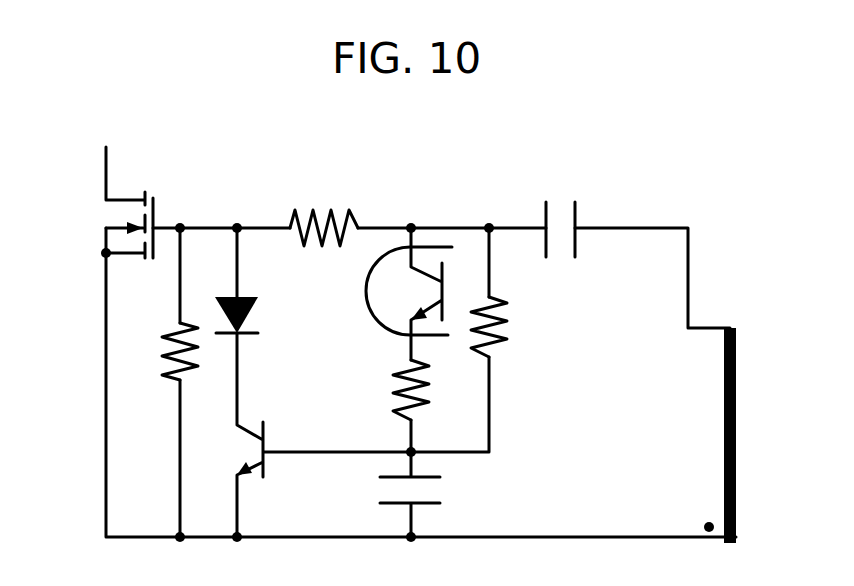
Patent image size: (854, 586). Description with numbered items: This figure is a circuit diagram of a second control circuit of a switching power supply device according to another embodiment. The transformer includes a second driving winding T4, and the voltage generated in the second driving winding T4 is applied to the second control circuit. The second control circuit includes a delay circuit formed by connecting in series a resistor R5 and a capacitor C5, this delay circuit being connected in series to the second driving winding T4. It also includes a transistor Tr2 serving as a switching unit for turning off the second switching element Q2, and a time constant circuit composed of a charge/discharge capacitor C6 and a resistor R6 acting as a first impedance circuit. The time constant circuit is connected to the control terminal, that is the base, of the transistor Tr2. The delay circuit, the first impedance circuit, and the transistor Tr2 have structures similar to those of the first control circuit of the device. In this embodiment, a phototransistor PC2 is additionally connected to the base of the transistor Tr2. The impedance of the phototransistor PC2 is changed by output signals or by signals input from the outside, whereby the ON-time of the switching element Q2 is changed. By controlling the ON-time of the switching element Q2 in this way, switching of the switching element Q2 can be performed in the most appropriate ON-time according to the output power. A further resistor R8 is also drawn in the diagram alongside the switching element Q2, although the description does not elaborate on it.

The second switching element Q2 is at (132, 186).
The resistor R5 is at (324, 208).
The capacitor C5 is at (556, 211).
The phototransistor PC2 is at (372, 340).
The resistor R6 is at (487, 340).
The resistor R8 is at (165, 382).
The transistor Tr2 is at (313, 382).
The charge/discharge capacitor C6 is at (431, 494).
The second driving winding T4 is at (708, 435).